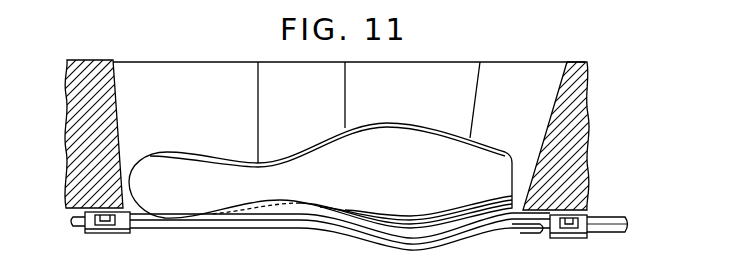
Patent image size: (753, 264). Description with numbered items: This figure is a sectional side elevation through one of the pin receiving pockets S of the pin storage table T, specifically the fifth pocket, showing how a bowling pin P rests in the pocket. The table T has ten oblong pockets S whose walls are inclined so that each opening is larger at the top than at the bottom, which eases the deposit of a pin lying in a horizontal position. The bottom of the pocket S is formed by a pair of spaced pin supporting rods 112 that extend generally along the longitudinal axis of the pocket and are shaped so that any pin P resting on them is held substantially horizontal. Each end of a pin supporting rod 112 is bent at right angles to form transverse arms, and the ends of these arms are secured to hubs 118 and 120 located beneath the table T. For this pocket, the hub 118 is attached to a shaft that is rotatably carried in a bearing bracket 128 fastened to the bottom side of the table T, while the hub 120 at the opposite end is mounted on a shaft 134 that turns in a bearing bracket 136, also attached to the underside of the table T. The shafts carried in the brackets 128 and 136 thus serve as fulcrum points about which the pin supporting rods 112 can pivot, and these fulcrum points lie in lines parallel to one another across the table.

The pin supporting rod 112 is at (268, 230).
The hub 118 is at (540, 238).
The hub 120 is at (147, 232).
The bearing bracket 128 is at (572, 240).
The shaft 134 is at (78, 230).
The bearing bracket 136 is at (112, 236).
The pocket S is at (117, 80).
The pin storage table T is at (510, 60).
The shoe form P is at (400, 135).